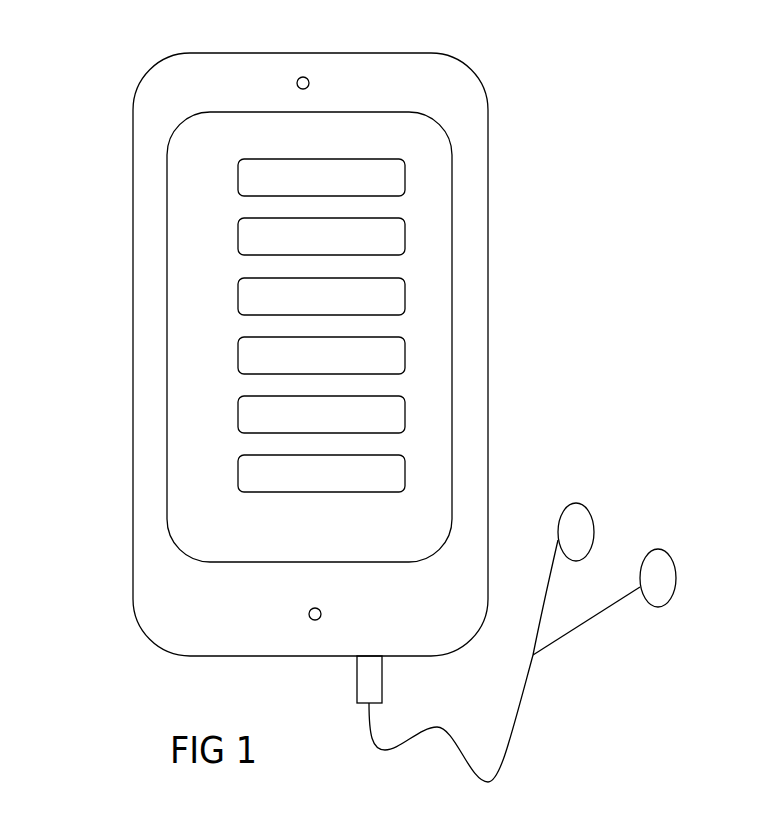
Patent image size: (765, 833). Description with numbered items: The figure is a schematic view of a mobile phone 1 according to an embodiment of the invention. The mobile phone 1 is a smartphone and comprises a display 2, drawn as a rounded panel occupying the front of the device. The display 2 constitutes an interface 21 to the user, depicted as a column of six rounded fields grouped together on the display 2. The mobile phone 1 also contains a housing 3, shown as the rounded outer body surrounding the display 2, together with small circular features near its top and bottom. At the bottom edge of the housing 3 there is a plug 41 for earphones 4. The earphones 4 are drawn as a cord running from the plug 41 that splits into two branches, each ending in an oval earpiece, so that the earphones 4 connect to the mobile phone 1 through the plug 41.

The mobile phone 1 is at (132, 65).
The display 2 is at (405, 112).
The interface 21 is at (417, 136).
The housing 3 is at (133, 560).
The earphones 4 is at (558, 670).
The plug 41 is at (357, 690).